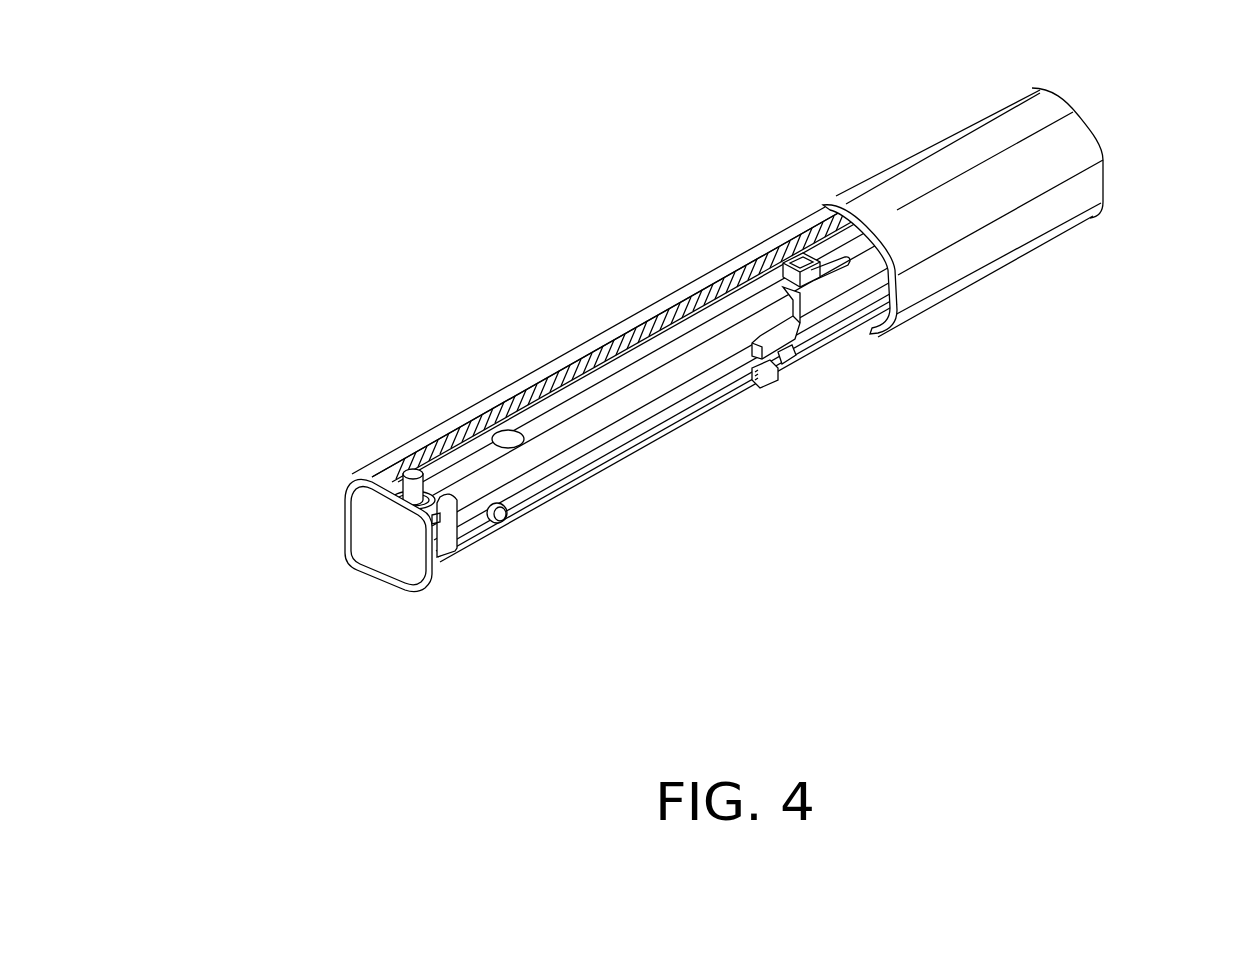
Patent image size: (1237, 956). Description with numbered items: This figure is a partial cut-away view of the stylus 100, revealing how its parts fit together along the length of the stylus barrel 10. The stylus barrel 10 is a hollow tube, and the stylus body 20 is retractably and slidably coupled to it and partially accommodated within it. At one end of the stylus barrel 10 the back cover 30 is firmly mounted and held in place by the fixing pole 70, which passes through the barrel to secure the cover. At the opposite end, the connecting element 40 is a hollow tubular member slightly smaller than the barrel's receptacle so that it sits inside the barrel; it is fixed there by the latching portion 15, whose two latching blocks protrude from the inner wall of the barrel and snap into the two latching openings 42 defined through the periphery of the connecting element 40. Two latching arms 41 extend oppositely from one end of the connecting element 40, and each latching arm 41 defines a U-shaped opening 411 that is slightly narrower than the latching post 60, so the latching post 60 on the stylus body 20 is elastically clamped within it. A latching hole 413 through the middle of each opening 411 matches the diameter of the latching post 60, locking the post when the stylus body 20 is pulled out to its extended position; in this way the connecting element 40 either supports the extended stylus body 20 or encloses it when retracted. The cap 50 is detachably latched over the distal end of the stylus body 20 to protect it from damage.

The stylus 100 is at (545, 185).
The stylus barrel 10 is at (515, 390).
The latching portion 15 is at (797, 253).
The stylus body 20 is at (590, 447).
The back cover 30 is at (378, 549).
The connecting element 40 is at (858, 313).
The latching arm 41 is at (782, 365).
The U-shaped opening 411 is at (790, 357).
The latching hole 413 is at (775, 390).
The latching opening 42 is at (806, 255).
The cap 50 is at (1037, 213).
The latching post 60 is at (507, 517).
The fixing pole 70 is at (412, 468).